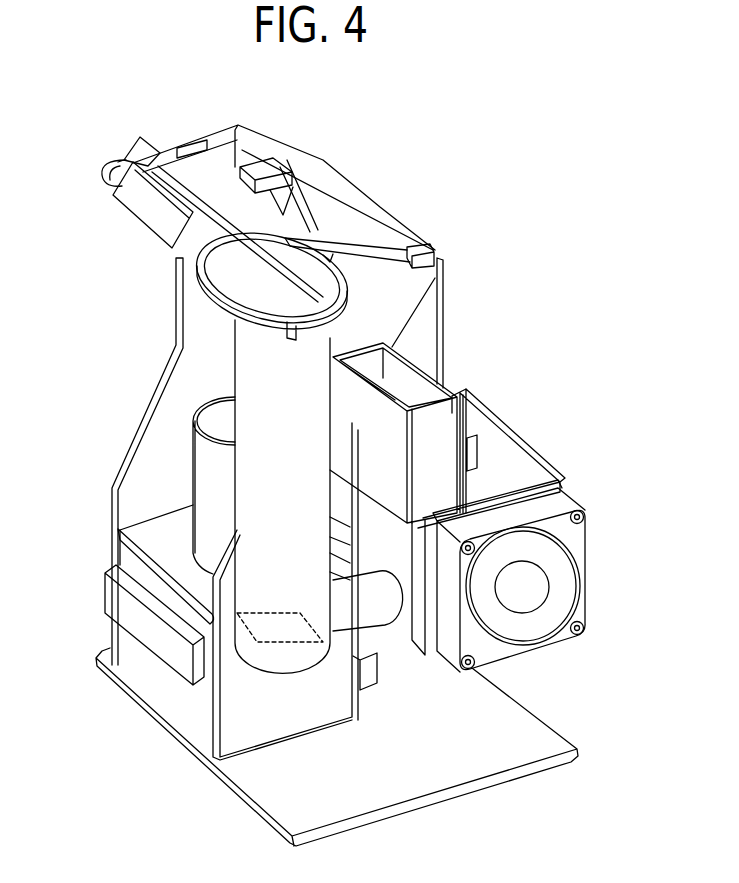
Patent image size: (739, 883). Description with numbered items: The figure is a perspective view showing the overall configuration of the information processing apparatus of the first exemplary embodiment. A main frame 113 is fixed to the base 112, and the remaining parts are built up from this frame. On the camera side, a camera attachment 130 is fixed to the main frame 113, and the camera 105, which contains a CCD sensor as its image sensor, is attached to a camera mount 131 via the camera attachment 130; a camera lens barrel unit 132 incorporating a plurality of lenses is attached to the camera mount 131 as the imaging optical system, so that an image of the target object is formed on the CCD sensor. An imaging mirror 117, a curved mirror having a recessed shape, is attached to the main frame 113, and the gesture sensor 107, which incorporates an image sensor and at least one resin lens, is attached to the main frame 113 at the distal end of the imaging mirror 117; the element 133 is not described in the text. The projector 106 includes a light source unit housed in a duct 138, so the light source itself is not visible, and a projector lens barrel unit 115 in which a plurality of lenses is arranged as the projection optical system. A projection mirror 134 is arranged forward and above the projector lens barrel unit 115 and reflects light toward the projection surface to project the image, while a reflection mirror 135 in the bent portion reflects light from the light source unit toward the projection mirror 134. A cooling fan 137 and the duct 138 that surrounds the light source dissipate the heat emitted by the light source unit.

The camera 105 is at (115, 610).
The projector 106 is at (552, 294).
The gesture sensor 107 is at (138, 217).
The base 112 is at (250, 782).
The main frame 113 is at (160, 417).
The projector lens barrel unit 115 is at (250, 359).
The imaging mirror 117 is at (358, 196).
The camera attachment 130 is at (130, 555).
The camera mount 131 is at (147, 532).
The camera lens barrel unit 132 is at (203, 463).
The tab 133 is at (137, 152).
The projection mirror 134 is at (227, 275).
The reflection mirror 135 is at (287, 632).
The cooling fan 137 is at (550, 503).
The duct 138 is at (500, 444).